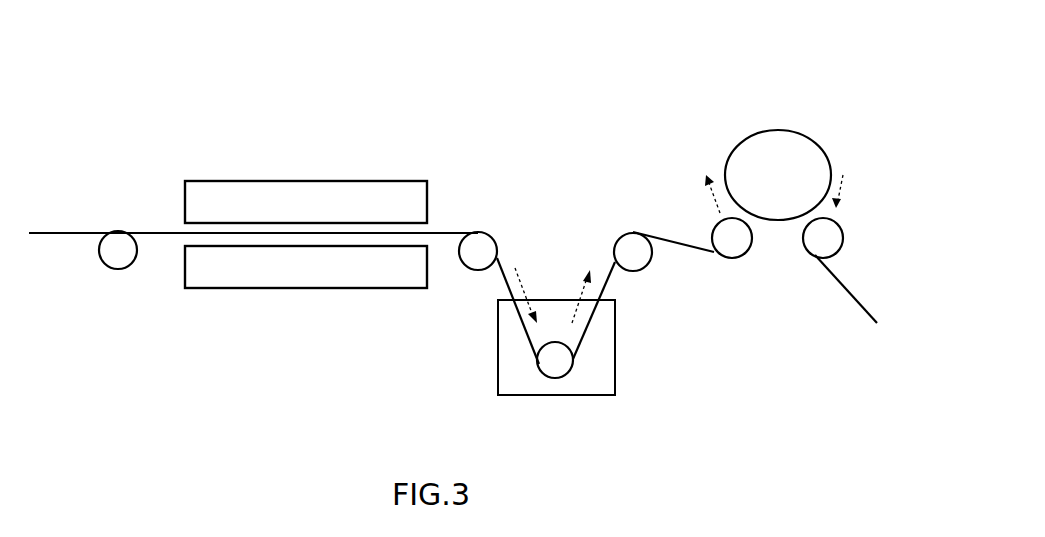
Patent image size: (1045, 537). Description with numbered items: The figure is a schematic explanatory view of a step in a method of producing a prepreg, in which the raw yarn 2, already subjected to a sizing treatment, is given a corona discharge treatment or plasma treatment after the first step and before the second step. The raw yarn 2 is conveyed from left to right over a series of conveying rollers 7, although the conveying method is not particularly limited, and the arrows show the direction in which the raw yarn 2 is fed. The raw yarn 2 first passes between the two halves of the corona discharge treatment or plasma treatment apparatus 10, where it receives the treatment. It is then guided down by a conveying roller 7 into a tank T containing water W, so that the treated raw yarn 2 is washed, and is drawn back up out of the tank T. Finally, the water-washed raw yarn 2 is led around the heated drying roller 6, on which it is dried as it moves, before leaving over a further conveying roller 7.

The raw yarn 2 is at (40, 232).
The conveying roller 7 is at (118, 270).
The corona discharge treatment or plasma treatment apparatus 10 is at (322, 180).
The heated drying roller 6 is at (770, 130).
The water W is at (605, 345).
The tank T is at (615, 390).